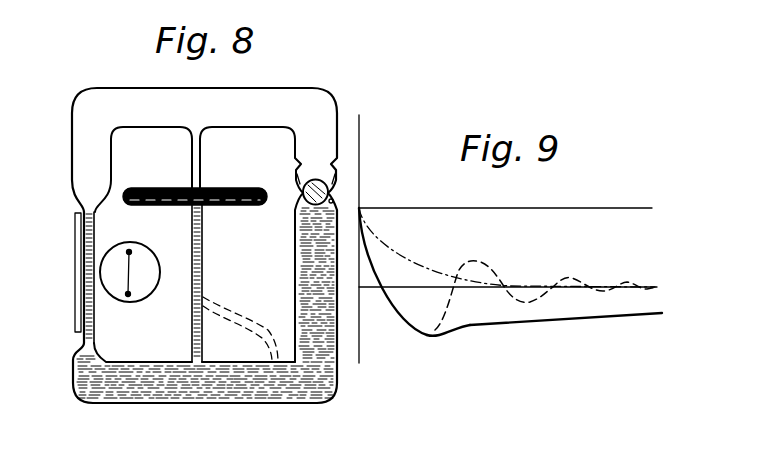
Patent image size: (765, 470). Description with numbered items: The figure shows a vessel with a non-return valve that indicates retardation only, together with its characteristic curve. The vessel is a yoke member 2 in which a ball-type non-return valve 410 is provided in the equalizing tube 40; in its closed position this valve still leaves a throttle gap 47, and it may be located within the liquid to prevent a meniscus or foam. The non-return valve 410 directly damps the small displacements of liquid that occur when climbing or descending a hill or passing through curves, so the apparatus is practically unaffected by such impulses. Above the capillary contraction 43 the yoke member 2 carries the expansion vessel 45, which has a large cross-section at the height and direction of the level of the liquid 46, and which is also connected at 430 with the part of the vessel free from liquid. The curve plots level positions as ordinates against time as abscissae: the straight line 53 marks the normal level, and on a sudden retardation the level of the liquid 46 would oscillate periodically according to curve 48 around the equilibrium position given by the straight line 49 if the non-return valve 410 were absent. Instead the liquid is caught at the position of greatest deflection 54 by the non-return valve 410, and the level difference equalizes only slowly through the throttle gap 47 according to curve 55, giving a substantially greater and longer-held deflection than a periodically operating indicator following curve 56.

In FIG. 8, the yoke member 2 is at (193, 385).
In FIG. 8, the equalizing tube 40 is at (306, 297).
In FIG. 8, the capillary contraction 43 is at (203, 268).
In FIG. 8, the expansion vessel 45 is at (230, 197).
In FIG. 8, the level of the liquid 46 is at (83, 202).
In FIG. 8, the throttle gap 47 is at (312, 213).
In FIG. 8, the ball-type non-return valve 410 is at (306, 196).
In FIG. 8, the connection to liquid-free vessel part 430 is at (208, 135).
In FIG. 9, the periodic oscillation curve 48 is at (485, 262).
In FIG. 9, the straight line of equilibrium position 49 is at (418, 288).
In FIG. 9, the straight line of normal level 53 is at (581, 208).
In FIG. 9, the position of greatest deflection 54 is at (426, 337).
In FIG. 9, the slow equalization curve 55 is at (586, 323).
In FIG. 9, the periodic indicating curve 56 is at (388, 250).